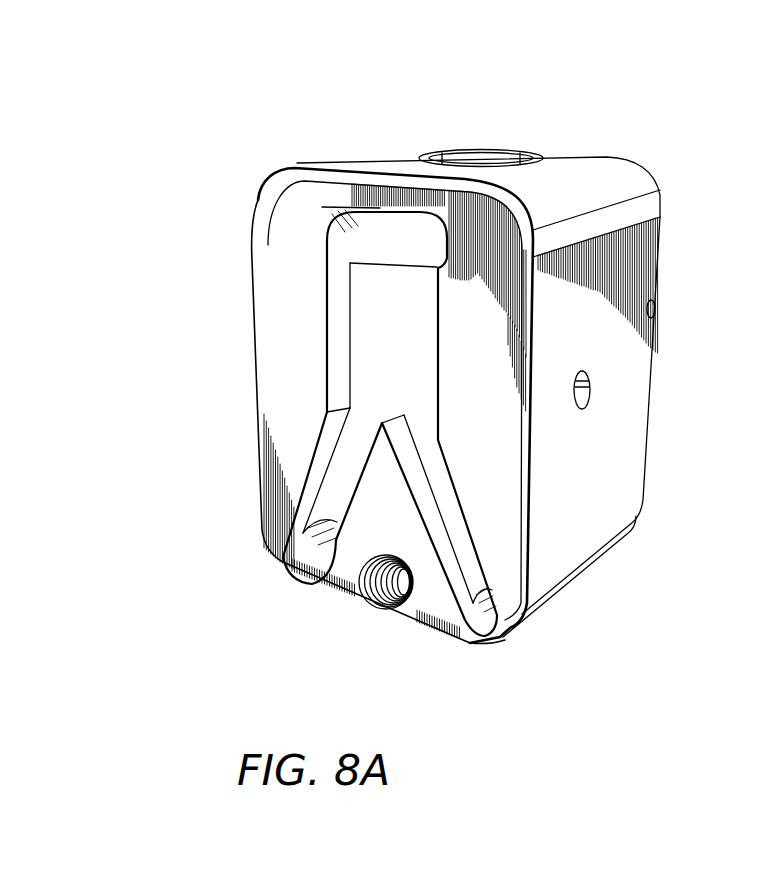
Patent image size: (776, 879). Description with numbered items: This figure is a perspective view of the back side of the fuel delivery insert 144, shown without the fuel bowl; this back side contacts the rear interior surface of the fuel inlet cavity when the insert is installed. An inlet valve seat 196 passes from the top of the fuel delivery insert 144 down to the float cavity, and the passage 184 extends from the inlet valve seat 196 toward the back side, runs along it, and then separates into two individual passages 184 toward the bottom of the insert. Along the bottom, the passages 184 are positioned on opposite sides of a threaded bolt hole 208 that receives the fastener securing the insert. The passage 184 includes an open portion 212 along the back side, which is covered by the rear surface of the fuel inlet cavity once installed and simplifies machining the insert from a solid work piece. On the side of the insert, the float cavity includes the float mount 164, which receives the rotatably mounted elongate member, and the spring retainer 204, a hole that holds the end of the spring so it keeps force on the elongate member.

The fuel delivery insert 144 is at (296, 108).
The inlet valve seat 196 is at (463, 153).
The passage 184 is at (327, 228).
The open portion 212 is at (325, 361).
The spring retainer 204 is at (658, 305).
The float mount 164 is at (582, 394).
The threaded bolt hole 208 is at (387, 605).